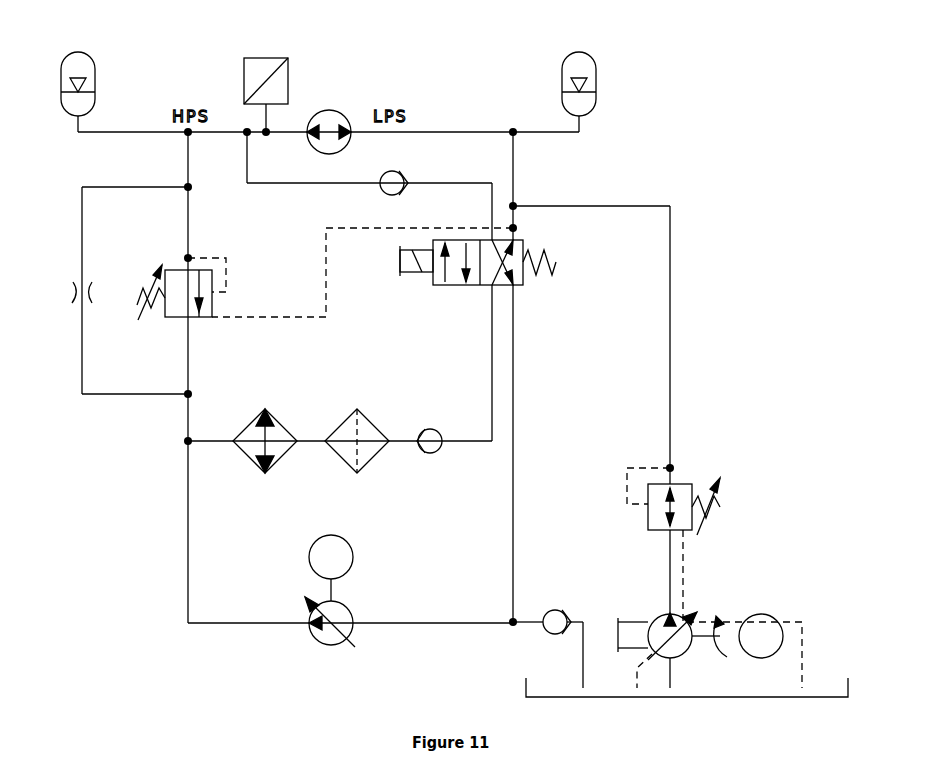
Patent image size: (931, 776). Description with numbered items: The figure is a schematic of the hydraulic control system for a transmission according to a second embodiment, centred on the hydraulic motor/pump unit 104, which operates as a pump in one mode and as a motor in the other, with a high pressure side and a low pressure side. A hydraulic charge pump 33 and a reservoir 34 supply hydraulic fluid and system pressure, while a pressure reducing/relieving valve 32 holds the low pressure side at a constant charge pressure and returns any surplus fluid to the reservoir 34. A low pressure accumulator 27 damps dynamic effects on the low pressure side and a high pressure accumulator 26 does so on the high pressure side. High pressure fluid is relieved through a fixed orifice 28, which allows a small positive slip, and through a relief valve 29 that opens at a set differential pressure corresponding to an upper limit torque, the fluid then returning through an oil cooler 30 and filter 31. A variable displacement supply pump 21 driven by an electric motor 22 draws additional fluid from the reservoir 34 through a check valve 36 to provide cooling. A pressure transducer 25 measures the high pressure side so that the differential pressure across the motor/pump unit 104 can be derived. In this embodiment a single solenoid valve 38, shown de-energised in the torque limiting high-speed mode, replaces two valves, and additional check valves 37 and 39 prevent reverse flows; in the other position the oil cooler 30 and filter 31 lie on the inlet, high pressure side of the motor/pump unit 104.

The variable displacement supply pump 21 is at (350, 605).
The electric motor 22 is at (350, 540).
The pressure transducer 25 is at (266, 58).
The high pressure accumulator 26 is at (85, 53).
The low pressure accumulator 27 is at (588, 53).
The fixed orifice 28 is at (73, 282).
The relief valve 29 is at (178, 320).
The oil cooler 30 is at (272, 411).
The filter 31 is at (363, 412).
The pressure reducing/relieving valve 32 is at (680, 484).
The hydraulic charge pump 33 is at (652, 617).
The reservoir 34 is at (728, 697).
The check valve 36 is at (562, 611).
The check valve 37 is at (401, 192).
The solenoid valve 38 is at (523, 285).
The check valve 39 is at (438, 452).
The hydraulic motor/pump unit 104 is at (340, 113).